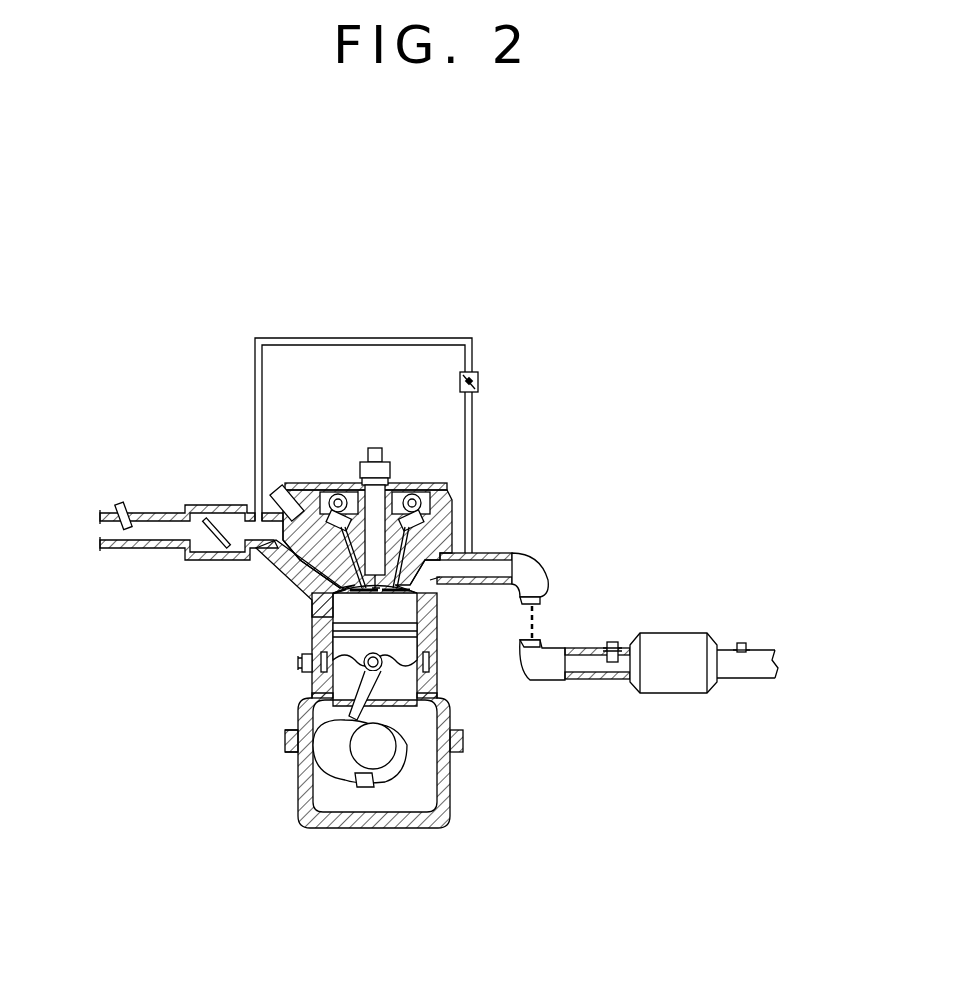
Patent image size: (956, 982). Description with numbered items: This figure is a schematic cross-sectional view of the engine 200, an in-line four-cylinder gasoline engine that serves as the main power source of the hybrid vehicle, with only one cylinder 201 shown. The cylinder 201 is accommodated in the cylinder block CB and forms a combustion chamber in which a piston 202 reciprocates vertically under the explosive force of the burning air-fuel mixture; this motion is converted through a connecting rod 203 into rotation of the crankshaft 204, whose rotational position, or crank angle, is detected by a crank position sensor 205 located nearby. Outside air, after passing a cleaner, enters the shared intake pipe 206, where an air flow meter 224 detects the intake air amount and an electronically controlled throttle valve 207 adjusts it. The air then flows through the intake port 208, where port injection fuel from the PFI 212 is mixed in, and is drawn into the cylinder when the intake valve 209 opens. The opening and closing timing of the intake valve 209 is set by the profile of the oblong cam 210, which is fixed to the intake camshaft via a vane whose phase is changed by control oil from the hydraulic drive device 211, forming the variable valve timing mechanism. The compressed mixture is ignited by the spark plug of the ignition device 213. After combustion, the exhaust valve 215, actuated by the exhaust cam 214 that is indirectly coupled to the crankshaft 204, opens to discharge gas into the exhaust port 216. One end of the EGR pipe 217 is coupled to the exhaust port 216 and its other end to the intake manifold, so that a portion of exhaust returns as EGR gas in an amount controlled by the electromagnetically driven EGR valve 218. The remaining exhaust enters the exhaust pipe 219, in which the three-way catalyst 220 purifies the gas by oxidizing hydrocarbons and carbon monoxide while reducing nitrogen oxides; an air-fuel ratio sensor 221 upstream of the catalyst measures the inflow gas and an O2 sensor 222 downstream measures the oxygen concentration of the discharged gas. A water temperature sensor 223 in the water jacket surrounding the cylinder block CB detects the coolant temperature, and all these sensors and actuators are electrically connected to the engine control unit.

The engine 200 is at (157, 259).
The cylinder 201 is at (311, 694).
The piston 202 is at (405, 641).
The connecting rod 203 is at (298, 729).
The crankshaft 204 is at (385, 752).
The crank position sensor 205 is at (340, 786).
The intake pipe 206 is at (155, 536).
The throttle valve 207 is at (213, 543).
The intake port 208 is at (301, 573).
The intake valve 209 is at (313, 592).
The cam 210 is at (306, 514).
The hydraulic drive device 211 is at (336, 510).
The PFI 212 is at (290, 503).
The ignition device 213 is at (375, 447).
The exhaust cam 214 is at (418, 506).
The exhaust valve 215 is at (440, 592).
The exhaust port 216 is at (483, 568).
The EGR pipe 217 is at (473, 506).
The EGR valve 218 is at (478, 374).
The exhaust pipe 219 is at (538, 578).
The three-way catalyst 220 is at (672, 666).
The air-fuel ratio sensor 221 is at (611, 644).
The O2 sensor 222 is at (746, 648).
The water temperature sensor 223 is at (300, 663).
The air flow meter 224 is at (121, 506).
The cylinder block CB is at (450, 703).